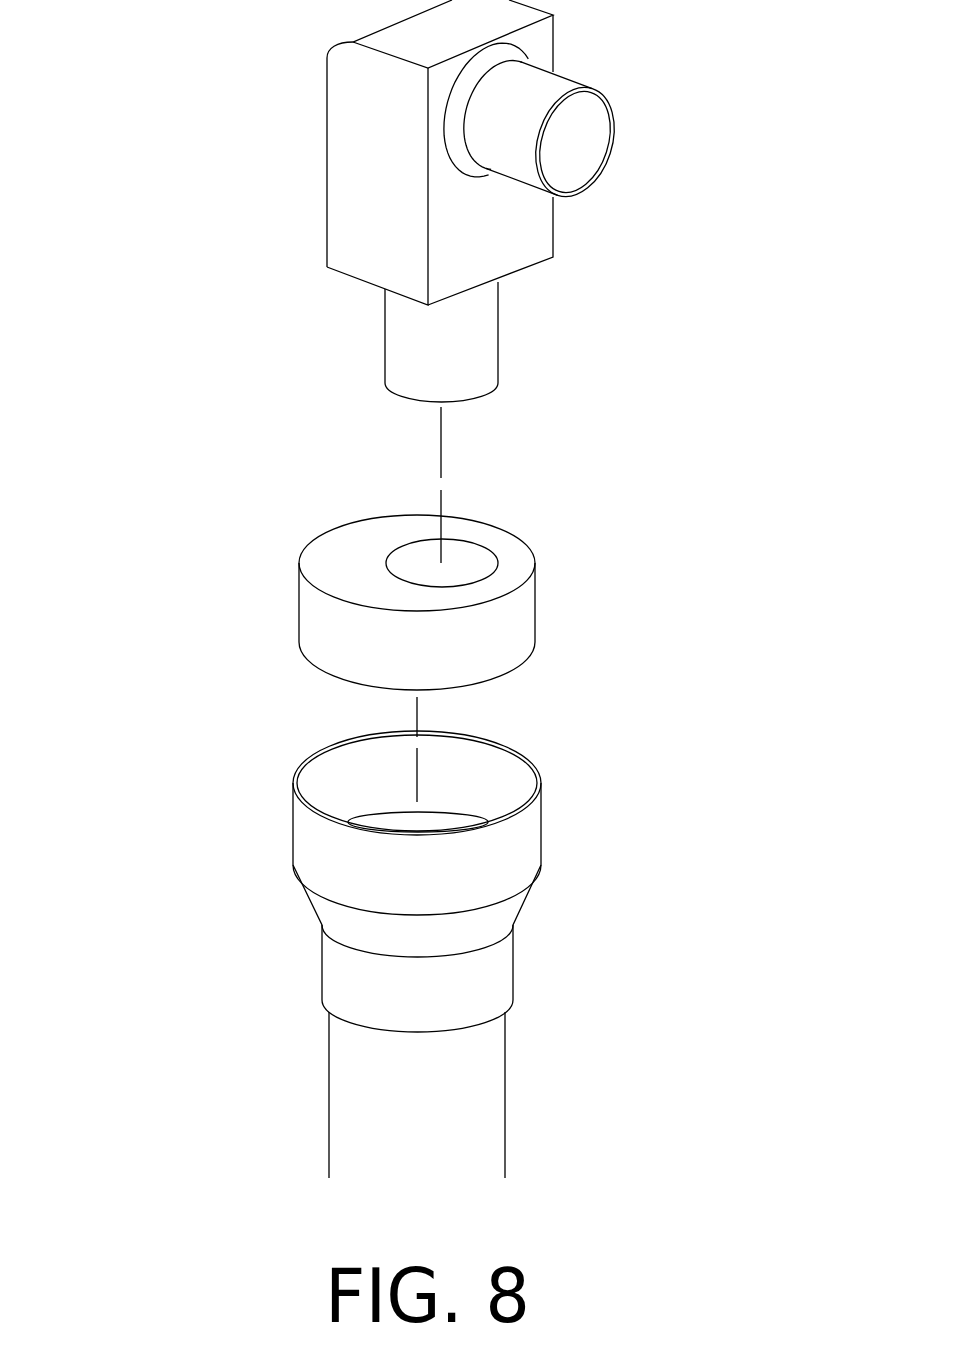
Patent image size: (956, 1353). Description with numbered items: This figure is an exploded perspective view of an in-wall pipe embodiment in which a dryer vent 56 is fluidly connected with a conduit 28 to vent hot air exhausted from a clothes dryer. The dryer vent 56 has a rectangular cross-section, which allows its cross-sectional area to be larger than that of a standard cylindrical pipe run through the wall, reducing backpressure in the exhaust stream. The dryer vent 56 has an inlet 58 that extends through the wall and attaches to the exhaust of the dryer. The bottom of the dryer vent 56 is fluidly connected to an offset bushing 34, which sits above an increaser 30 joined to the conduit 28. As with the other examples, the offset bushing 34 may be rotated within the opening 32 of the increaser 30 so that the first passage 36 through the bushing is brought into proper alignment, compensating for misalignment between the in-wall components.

The conduit 28 is at (477, 1148).
The increaser 30 is at (523, 855).
The opening 32 is at (333, 792).
The offset bushing 34 is at (492, 635).
The first passage 36 is at (467, 570).
The dryer vent 56 is at (362, 180).
The inlet 58 is at (588, 143).